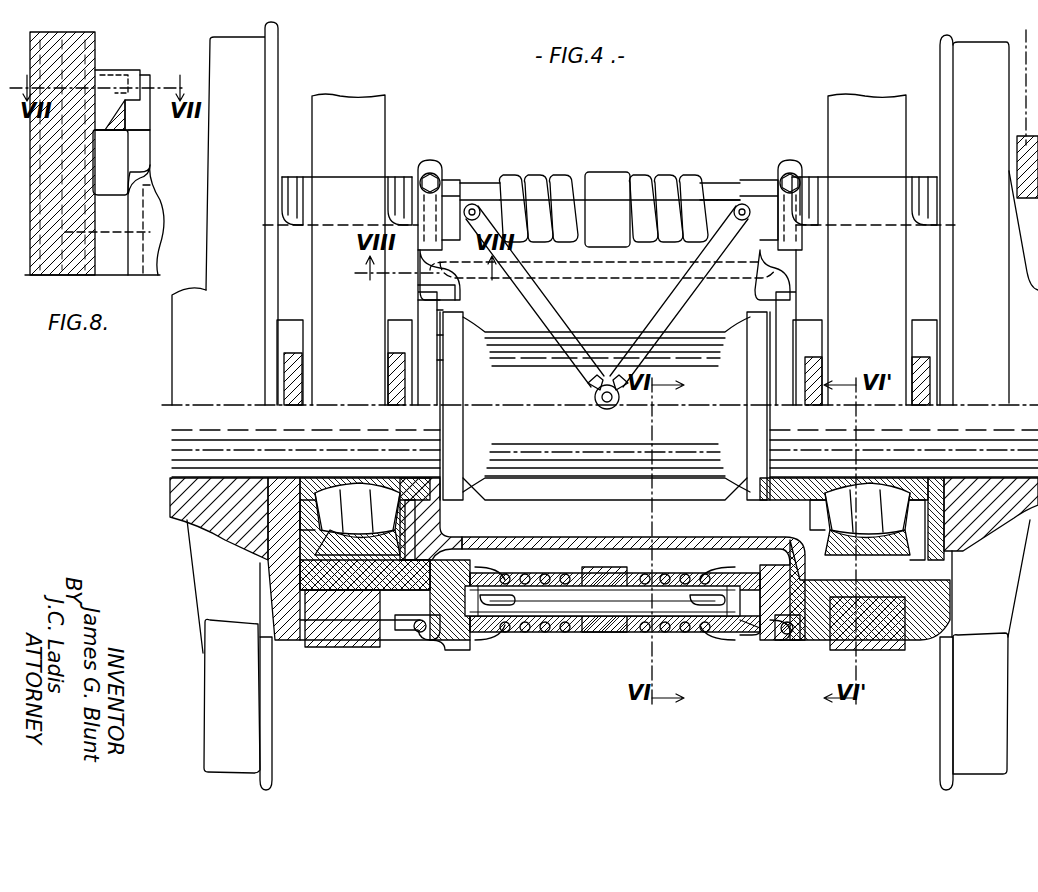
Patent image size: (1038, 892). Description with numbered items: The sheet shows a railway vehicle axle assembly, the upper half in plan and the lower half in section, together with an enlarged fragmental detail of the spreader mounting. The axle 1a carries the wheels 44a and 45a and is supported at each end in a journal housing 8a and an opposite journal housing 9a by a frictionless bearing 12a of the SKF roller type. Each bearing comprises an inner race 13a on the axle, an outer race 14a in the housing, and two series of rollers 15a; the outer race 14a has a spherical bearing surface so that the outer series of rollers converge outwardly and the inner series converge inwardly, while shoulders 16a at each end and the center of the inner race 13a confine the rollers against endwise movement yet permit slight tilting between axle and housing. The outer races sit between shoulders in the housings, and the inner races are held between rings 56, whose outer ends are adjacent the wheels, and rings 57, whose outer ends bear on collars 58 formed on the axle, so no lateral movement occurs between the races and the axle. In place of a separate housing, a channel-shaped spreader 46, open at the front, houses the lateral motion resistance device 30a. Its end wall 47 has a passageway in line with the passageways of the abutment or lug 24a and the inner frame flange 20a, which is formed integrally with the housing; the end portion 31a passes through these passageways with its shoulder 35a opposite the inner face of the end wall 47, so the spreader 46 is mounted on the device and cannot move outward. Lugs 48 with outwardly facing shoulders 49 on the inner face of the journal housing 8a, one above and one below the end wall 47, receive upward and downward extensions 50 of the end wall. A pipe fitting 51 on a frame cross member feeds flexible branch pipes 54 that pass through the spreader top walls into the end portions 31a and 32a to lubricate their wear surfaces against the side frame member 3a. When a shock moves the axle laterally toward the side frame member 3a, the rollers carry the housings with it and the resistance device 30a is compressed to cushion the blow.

In FIG. 4, the axle 1a is at (672, 462).
In FIG. 4, the side frame member 3a is at (352, 650).
In FIG. 8, the journal housing 8a is at (95, 55).
In FIG. 4, the journal housing 8a is at (285, 576).
In FIG. 4, the journal housing 9a is at (928, 260).
In FIG. 4, the frictionless bearing 12a is at (345, 500).
In FIG. 4, the inner race 13a is at (300, 480).
In FIG. 4, the outer race 14a is at (436, 530).
In FIG. 4, the rollers 15a is at (360, 490).
In FIG. 4, the shoulders 16a is at (352, 545).
In FIG. 4, the frame flanges 20a is at (288, 650).
In FIG. 4, the abutment or lug 24a is at (425, 640).
In FIG. 4, the lateral motion resistance device 30a is at (642, 190).
In FIG. 4, the end portion 31a is at (478, 640).
In FIG. 4, the end portion 32a is at (755, 635).
In FIG. 4, the part or shoulder 35a is at (460, 640).
In FIG. 4, the wheel 44a is at (268, 62).
In FIG. 4, the wheel 45a is at (950, 62).
In FIG. 8, the spreader 46 is at (165, 172).
In FIG. 4, the spreader 46 is at (728, 262).
In FIG. 8, the end wall 47 is at (143, 185).
In FIG. 4, the end wall 47 is at (445, 570).
In FIG. 8, the lugs 48 is at (115, 78).
In FIG. 4, the lugs 48 is at (440, 195).
In FIG. 4, the shoulders 49 is at (445, 285).
In FIG. 8, the extensions 50 is at (143, 125).
In FIG. 4, the pipe fitting 51 is at (596, 402).
In FIG. 4, the outlet branch pipes 54 is at (660, 318).
In FIG. 4, the rings 56 is at (262, 490).
In FIG. 4, the rings 57 is at (455, 510).
In FIG. 4, the collars 58 is at (462, 422).